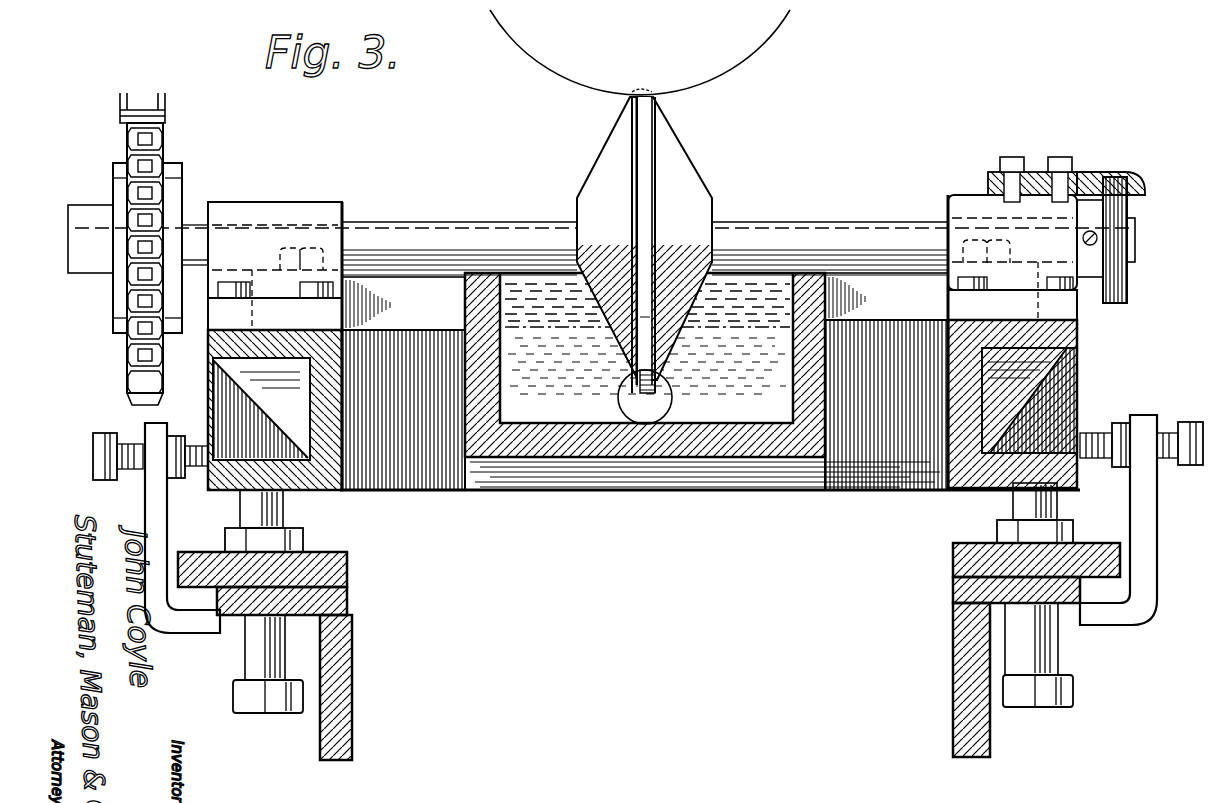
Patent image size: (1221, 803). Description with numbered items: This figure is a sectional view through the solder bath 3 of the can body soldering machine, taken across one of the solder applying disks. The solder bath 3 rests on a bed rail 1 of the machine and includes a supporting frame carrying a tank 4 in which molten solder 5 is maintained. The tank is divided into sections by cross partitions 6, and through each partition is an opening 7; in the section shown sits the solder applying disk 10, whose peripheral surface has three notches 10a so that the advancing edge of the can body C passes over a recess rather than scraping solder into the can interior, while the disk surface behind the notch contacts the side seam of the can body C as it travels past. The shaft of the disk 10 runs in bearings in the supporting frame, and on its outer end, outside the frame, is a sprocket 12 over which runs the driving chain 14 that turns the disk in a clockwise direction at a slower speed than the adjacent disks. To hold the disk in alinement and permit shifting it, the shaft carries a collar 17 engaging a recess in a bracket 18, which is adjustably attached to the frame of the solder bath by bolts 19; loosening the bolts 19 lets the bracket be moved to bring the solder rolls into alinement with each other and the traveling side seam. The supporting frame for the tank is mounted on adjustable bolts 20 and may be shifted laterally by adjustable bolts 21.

The bed rail 1 is at (350, 684).
The solder bath 3 is at (995, 400).
The tank 4 is at (535, 452).
The molten solder 5 is at (745, 278).
The cross partition 6 is at (525, 278).
The opening 7 is at (645, 412).
The solder applying disk 10 is at (665, 152).
The notch 10a is at (640, 355).
The sprocket 12 is at (182, 163).
The driving chain 14 is at (137, 105).
The collar 17 is at (1113, 205).
The bracket 18 is at (1115, 172).
The bolts 19 is at (1058, 157).
The adjustable bolts 20 is at (283, 511).
The adjustable bolts 21 is at (127, 448).
The can body C is at (783, 30).
The contact point c is at (646, 86).